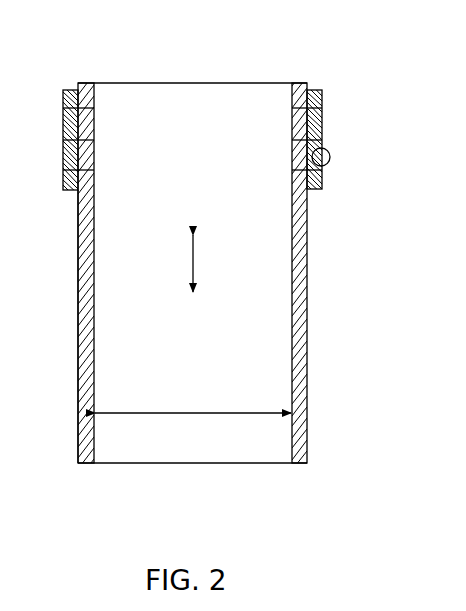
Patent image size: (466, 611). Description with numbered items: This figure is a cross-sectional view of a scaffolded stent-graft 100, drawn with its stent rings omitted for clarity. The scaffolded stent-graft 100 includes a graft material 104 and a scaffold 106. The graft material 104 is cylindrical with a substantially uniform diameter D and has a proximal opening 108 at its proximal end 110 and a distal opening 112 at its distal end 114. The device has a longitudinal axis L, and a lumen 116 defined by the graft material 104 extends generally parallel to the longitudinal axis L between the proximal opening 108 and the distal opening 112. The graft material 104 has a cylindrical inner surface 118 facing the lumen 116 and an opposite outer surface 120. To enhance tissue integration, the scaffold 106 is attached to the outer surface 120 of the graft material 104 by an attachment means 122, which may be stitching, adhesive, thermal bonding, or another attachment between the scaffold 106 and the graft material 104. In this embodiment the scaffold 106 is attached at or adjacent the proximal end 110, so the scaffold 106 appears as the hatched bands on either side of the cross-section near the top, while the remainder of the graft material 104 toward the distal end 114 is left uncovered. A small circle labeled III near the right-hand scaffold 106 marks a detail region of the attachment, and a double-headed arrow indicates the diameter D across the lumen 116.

The scaffolded stent-graft 100 is at (143, 53).
The graft material 104 is at (307, 298).
The scaffold 106 is at (63, 103).
The proximal opening 108 is at (175, 65).
The proximal end 110 is at (261, 83).
The distal opening 112 is at (250, 475).
The distal end 114 is at (110, 465).
The lumen 116 is at (192, 335).
The inner surface 118 is at (94, 238).
The outer surface 120 is at (78, 248).
The attachment means 122 is at (83, 140).
The detail view circle III is at (330, 160).
The longitudinal axis L is at (195, 252).
The diameter D is at (152, 413).